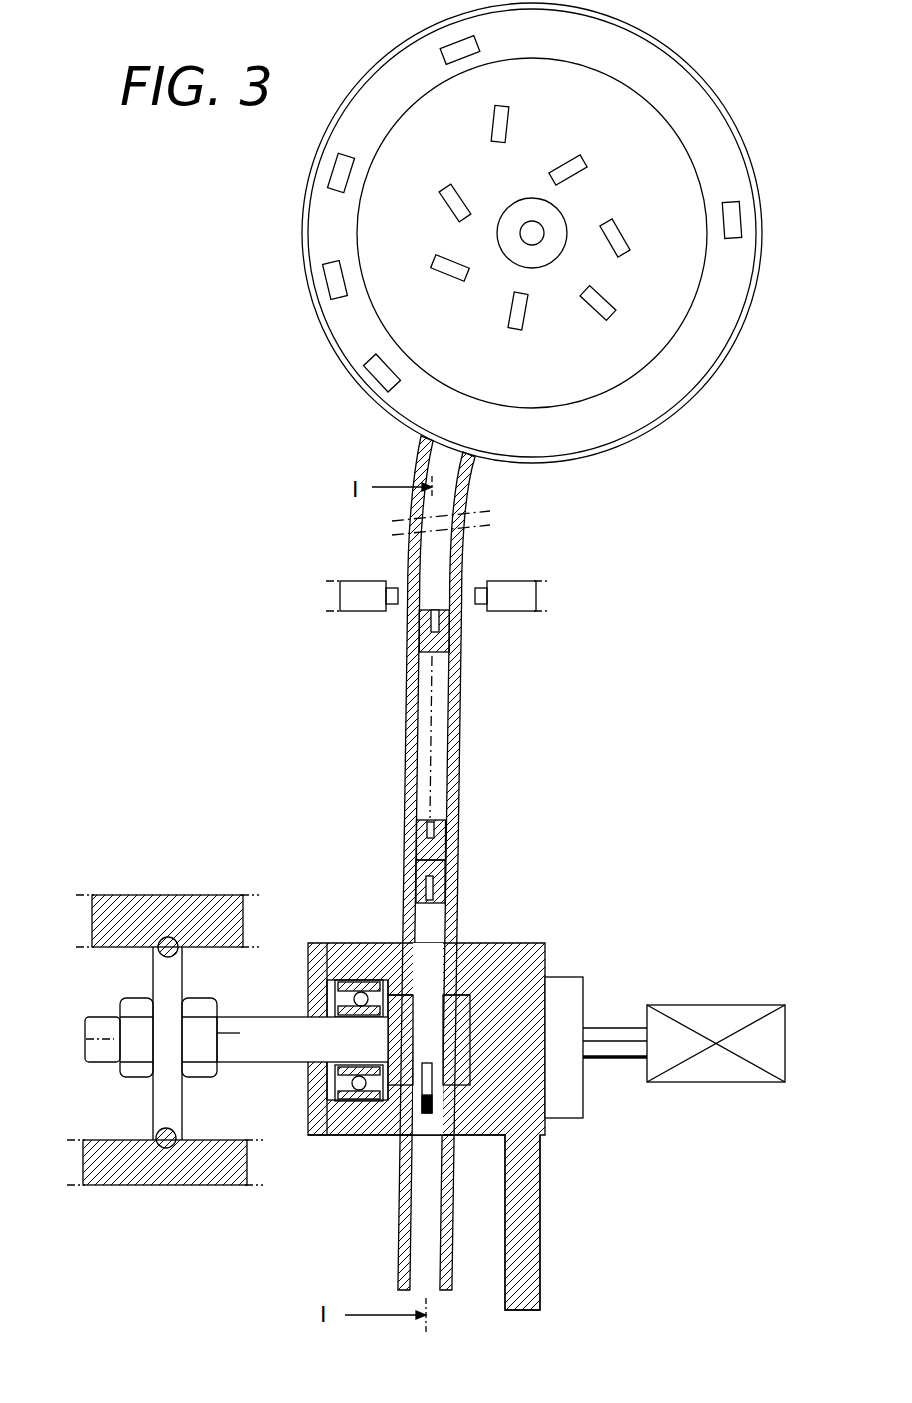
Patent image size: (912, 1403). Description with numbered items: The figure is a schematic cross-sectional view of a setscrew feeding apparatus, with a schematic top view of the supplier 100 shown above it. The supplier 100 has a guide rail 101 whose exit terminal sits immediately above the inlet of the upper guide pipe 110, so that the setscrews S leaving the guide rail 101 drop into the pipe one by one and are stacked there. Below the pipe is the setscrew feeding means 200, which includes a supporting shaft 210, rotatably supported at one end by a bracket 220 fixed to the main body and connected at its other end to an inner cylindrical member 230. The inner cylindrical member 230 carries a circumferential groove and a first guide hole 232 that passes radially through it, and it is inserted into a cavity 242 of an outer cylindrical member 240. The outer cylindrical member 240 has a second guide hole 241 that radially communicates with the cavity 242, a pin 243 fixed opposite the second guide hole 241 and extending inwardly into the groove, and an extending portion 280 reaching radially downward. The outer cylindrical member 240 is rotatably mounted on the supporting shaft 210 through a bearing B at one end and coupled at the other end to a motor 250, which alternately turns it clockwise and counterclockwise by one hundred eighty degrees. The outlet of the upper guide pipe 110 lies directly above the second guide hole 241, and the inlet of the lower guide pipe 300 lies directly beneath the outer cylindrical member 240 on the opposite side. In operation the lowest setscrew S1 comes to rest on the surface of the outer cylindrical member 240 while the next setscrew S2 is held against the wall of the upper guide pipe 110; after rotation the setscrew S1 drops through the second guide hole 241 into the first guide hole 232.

The supplier 100 is at (484, 233).
The guide rail 101 is at (330, 222).
The setscrew S is at (323, 341).
The upper guide pipe 110 is at (472, 547).
The lowest setscrew S1 is at (424, 878).
The next setscrew S2 is at (446, 840).
The setscrew feeding means 200 is at (480, 1090).
The supporting shaft 210 is at (275, 1065).
The bracket 220 is at (137, 895).
The inner cylindrical member 230 is at (547, 965).
The first guide hole 232 is at (461, 963).
The second guide hole 241 is at (400, 942).
The cavity 242 is at (462, 1080).
The pin 243 is at (397, 1130).
The outer cylindrical member 240 is at (544, 1160).
The motor 250 is at (715, 1085).
The extending portion 280 is at (540, 1280).
The lower guide pipe 300 is at (397, 1240).
The bearing B is at (358, 1095).